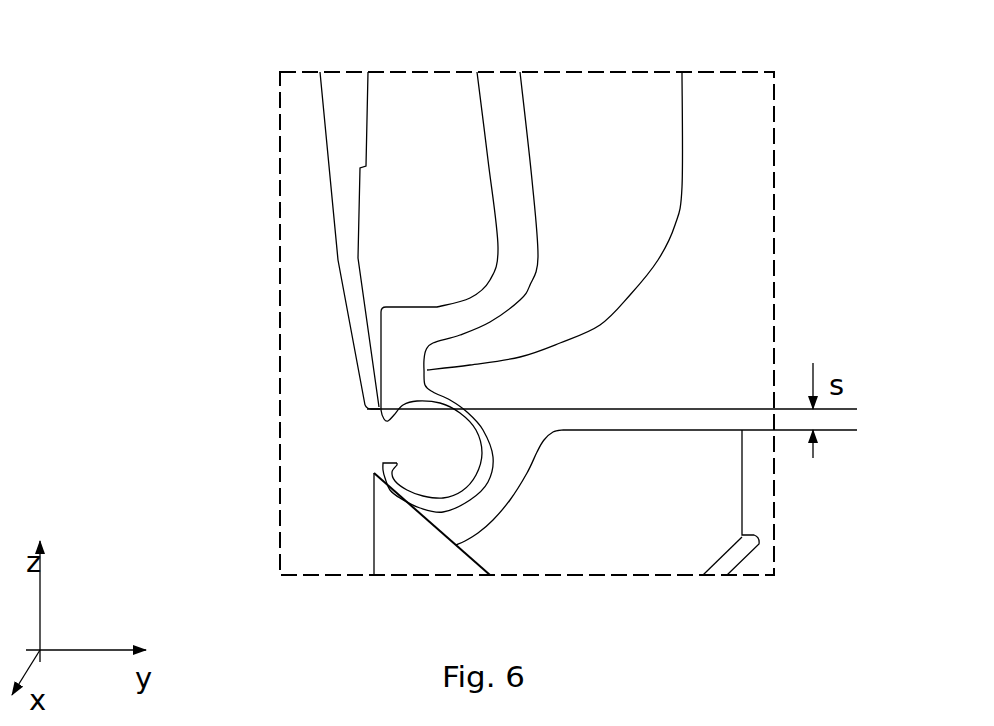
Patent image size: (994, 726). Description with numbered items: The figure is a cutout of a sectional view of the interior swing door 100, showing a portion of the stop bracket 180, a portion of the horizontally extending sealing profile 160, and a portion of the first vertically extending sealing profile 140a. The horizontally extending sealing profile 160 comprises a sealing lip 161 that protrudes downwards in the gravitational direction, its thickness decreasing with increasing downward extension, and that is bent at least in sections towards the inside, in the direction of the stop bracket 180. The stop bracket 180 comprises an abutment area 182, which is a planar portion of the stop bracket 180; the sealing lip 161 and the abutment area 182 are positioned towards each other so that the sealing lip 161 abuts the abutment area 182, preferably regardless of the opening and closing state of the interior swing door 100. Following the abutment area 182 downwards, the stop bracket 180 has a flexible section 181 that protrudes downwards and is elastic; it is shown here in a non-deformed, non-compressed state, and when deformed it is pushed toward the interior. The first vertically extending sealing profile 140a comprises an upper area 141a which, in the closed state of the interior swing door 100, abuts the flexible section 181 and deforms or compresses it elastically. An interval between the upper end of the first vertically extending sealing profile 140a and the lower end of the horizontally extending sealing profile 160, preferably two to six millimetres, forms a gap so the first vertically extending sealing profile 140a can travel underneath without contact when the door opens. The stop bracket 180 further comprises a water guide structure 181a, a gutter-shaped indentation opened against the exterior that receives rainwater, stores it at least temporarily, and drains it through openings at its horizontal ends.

The interior swing door 100 is at (146, 56).
The horizontally extending sealing profile 160 is at (250, 240).
The sealing lip 161 is at (327, 262).
The stop bracket 180 is at (465, 293).
The abutment area 182 is at (380, 350).
The flexible section 181 is at (305, 292).
The water guide structure 181a is at (277, 449).
The upper area 141a is at (375, 550).
The first vertically extending sealing profile 140a is at (427, 542).